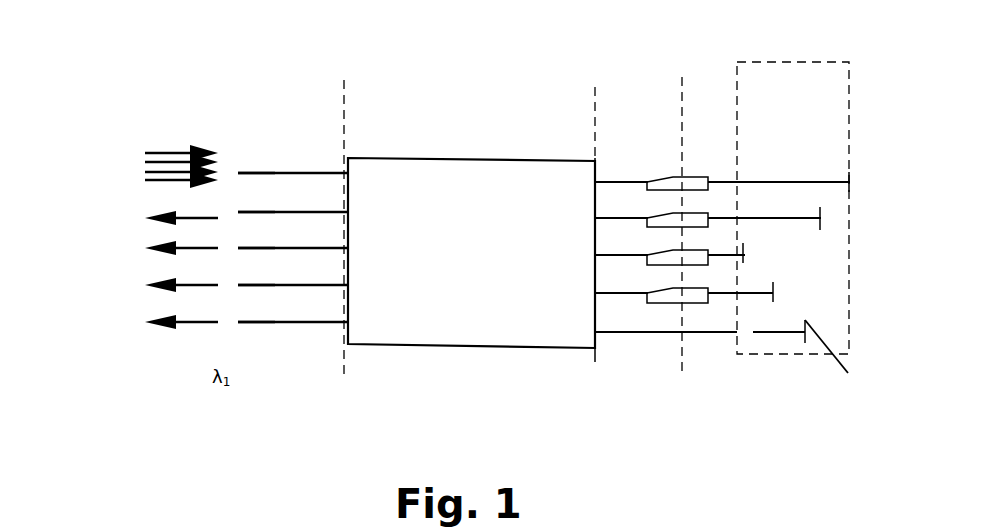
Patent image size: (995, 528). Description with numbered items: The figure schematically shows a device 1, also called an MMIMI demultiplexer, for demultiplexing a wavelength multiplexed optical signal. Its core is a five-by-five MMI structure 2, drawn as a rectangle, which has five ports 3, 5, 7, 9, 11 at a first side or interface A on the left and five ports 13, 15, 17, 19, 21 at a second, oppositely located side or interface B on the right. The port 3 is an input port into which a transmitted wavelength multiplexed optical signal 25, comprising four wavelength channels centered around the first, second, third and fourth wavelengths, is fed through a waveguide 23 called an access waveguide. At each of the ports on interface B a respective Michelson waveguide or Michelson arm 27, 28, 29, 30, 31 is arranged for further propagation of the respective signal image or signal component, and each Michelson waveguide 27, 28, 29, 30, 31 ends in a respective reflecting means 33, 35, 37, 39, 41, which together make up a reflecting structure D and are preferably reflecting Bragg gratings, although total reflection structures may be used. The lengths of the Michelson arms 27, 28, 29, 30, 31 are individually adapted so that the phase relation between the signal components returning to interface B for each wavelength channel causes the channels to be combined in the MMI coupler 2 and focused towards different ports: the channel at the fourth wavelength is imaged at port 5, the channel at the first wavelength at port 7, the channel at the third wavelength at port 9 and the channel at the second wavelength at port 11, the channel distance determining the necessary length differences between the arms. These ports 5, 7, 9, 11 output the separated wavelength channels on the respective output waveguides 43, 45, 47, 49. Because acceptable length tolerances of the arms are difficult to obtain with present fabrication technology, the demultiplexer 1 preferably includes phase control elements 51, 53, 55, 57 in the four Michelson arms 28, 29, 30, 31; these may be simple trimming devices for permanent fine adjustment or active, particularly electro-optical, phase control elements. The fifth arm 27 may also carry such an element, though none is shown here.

The device 1 is at (421, 26).
The 5×5 MMI structure 2 is at (445, 157).
The port 3 is at (346, 173).
The port 5 is at (346, 212).
The port 7 is at (346, 248).
The port 9 is at (346, 285).
The port 11 is at (346, 322).
The port 13 is at (597, 182).
The port 15 is at (597, 218).
The port 17 is at (597, 255).
The port 19 is at (597, 293).
The port 21 is at (597, 332).
The access waveguide 23 is at (268, 173).
The wavelength multiplexed optical signal 25 is at (145, 162).
The Michelson waveguide 27 is at (706, 333).
The Michelson waveguide 28 is at (744, 182).
The Michelson waveguide 29 is at (744, 219).
The Michelson waveguide 30 is at (726, 255).
The Michelson waveguide 31 is at (723, 293).
The reflecting means 33 is at (852, 182).
The reflecting means 35 is at (822, 226).
The reflecting means 37 is at (748, 260).
The reflecting means 39 is at (775, 300).
The reflecting means 41 is at (840, 366).
The output waveguide 43 is at (267, 212).
The output waveguide 45 is at (267, 248).
The output waveguide 47 is at (267, 285).
The output waveguide 49 is at (267, 322).
The phase control element 51 is at (672, 177).
The phase control element 53 is at (693, 212).
The phase control element 55 is at (693, 250).
The phase control element 57 is at (690, 290).